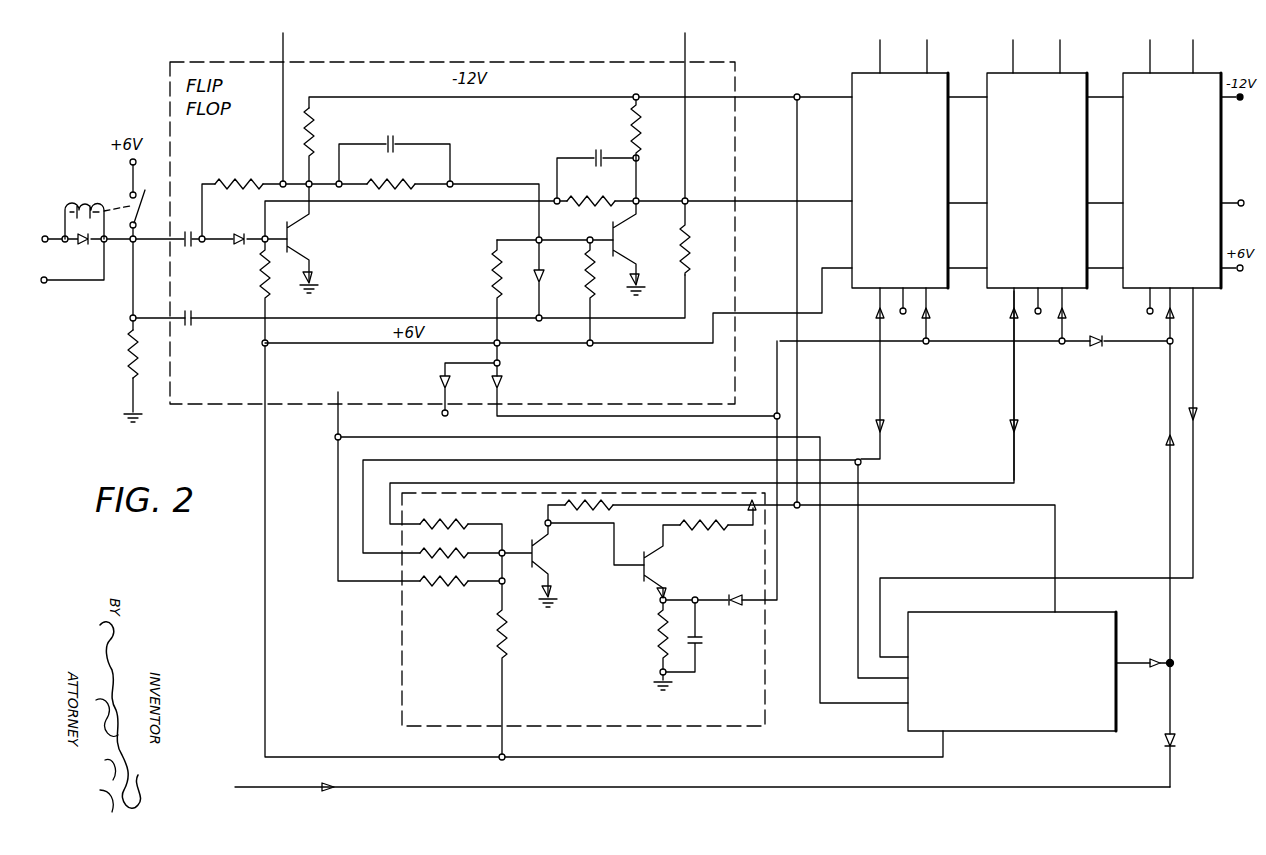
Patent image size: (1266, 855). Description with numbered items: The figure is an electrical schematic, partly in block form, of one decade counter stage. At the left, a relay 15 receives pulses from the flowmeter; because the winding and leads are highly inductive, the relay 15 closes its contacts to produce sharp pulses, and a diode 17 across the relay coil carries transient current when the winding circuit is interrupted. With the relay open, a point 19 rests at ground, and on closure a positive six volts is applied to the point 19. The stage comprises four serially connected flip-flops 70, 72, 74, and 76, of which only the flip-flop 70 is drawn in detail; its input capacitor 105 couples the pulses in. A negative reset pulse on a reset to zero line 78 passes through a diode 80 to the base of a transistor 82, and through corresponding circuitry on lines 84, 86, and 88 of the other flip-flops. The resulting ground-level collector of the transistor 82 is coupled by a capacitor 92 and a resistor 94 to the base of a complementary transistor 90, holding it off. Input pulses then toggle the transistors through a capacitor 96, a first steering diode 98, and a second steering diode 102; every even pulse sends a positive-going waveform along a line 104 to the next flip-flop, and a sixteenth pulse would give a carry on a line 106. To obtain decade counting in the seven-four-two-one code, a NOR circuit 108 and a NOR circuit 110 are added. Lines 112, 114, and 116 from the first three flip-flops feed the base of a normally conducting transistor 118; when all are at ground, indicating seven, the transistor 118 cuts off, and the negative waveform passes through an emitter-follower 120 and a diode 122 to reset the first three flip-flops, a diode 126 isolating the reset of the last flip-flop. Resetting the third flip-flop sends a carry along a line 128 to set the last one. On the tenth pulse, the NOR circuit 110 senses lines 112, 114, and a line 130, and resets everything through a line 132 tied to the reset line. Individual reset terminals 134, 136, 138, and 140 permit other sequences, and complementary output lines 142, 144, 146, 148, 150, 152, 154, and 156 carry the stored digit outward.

The relay 15 is at (86, 210).
The diode 17 is at (85, 258).
The point 19 is at (130, 318).
The flip-flop 70 is at (735, 84).
The flip-flop 72 is at (950, 78).
The flip-flop 74 is at (1086, 76).
The flip-flop 76 is at (1220, 74).
The reset to zero line 78 is at (704, 790).
The diode 80 is at (502, 386).
The transistor 82 is at (620, 238).
The line 84 is at (928, 310).
The line 86 is at (1064, 310).
The line 88 is at (1186, 335).
The complementary transistor 90 is at (296, 240).
The capacitor 92 is at (600, 138).
The resistor 94 is at (602, 184).
The capacitor 96 is at (190, 314).
The first steering diode 98 is at (533, 272).
The second steering diode 102 is at (248, 226).
The line 104 is at (740, 212).
The capacitor 105 is at (179, 248).
The line 106 is at (1241, 200).
The NOR circuit 108 is at (400, 680).
The NOR circuit 110 is at (1064, 734).
The line 112 is at (341, 396).
The line 114 is at (876, 408).
The line 116 is at (1011, 408).
The transistor 118 is at (540, 555).
The emitter-follower 120 is at (650, 572).
The diode 122 is at (735, 606).
The diode 126 is at (1094, 348).
The line 128 is at (1112, 210).
The line 130 is at (1198, 481).
The line 132 is at (1126, 658).
The reset terminal 134 is at (441, 412).
The reset terminal 136 is at (901, 314).
The reset terminal 138 is at (1036, 314).
The reset terminal 140 is at (1148, 314).
The output line 142 is at (285, 50).
The output line 144 is at (687, 50).
The output line 146 is at (878, 50).
The output line 148 is at (926, 50).
The output line 150 is at (1012, 48).
The output line 152 is at (1060, 48).
The output line 154 is at (1150, 48).
The output line 156 is at (1193, 48).